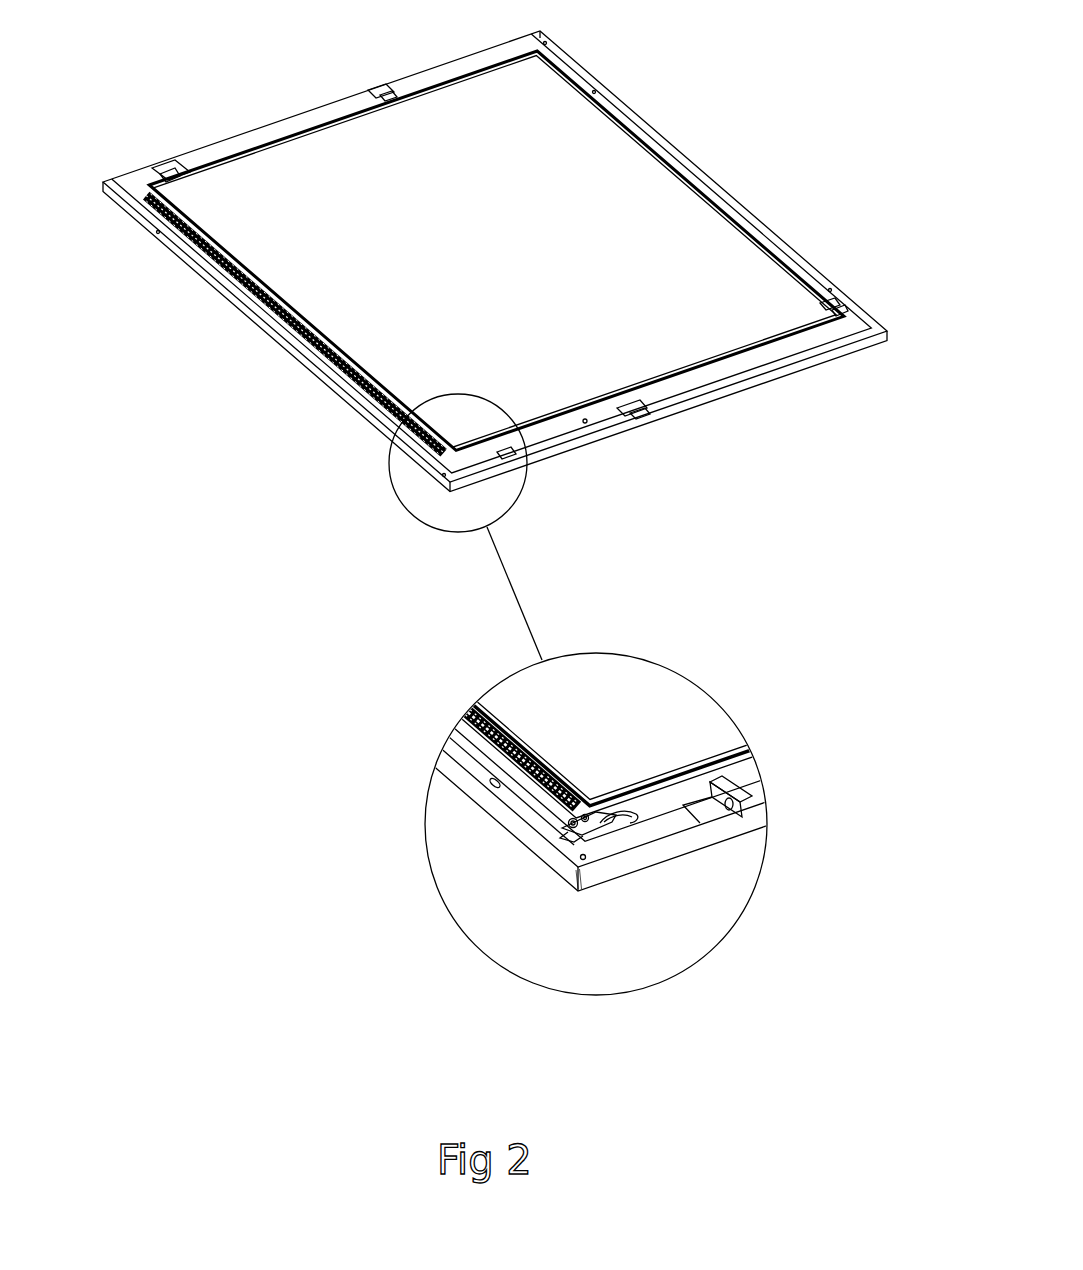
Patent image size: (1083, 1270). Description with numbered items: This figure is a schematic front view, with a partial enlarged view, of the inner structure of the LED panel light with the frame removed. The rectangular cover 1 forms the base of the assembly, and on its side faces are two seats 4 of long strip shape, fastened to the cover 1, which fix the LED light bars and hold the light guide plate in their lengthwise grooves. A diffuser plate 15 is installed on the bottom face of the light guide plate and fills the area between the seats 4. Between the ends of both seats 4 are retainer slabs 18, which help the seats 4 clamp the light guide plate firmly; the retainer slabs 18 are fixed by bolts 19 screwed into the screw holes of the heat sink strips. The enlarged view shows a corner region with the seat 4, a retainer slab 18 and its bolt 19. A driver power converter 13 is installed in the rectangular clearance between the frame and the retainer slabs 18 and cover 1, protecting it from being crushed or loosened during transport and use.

The cover 1 is at (418, 85).
The driver power converter 13 is at (226, 148).
The diffuser plate 15 is at (613, 192).
The seat 4 is at (845, 316).
The bolt 19 is at (570, 825).
The retainer slab 18 is at (588, 830).